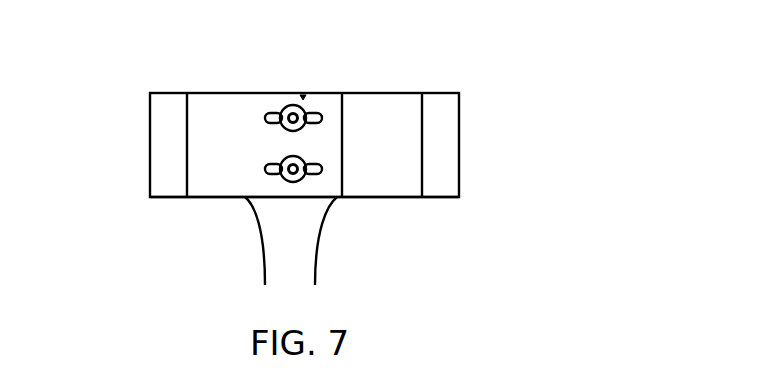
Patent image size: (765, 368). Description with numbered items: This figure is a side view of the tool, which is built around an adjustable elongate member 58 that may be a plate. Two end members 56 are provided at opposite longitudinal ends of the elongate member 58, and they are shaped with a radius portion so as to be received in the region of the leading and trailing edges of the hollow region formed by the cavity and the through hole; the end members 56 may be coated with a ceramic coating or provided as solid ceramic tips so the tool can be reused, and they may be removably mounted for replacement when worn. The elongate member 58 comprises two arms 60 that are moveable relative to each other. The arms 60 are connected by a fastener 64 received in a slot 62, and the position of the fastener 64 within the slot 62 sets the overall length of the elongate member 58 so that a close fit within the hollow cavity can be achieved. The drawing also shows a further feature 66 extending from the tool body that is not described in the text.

The end member 56 is at (163, 128).
The elongate member 58 is at (213, 186).
The arm 60 is at (230, 100).
The slot 62 is at (323, 168).
The fastener 64 is at (303, 95).
The strap 66 is at (293, 257).